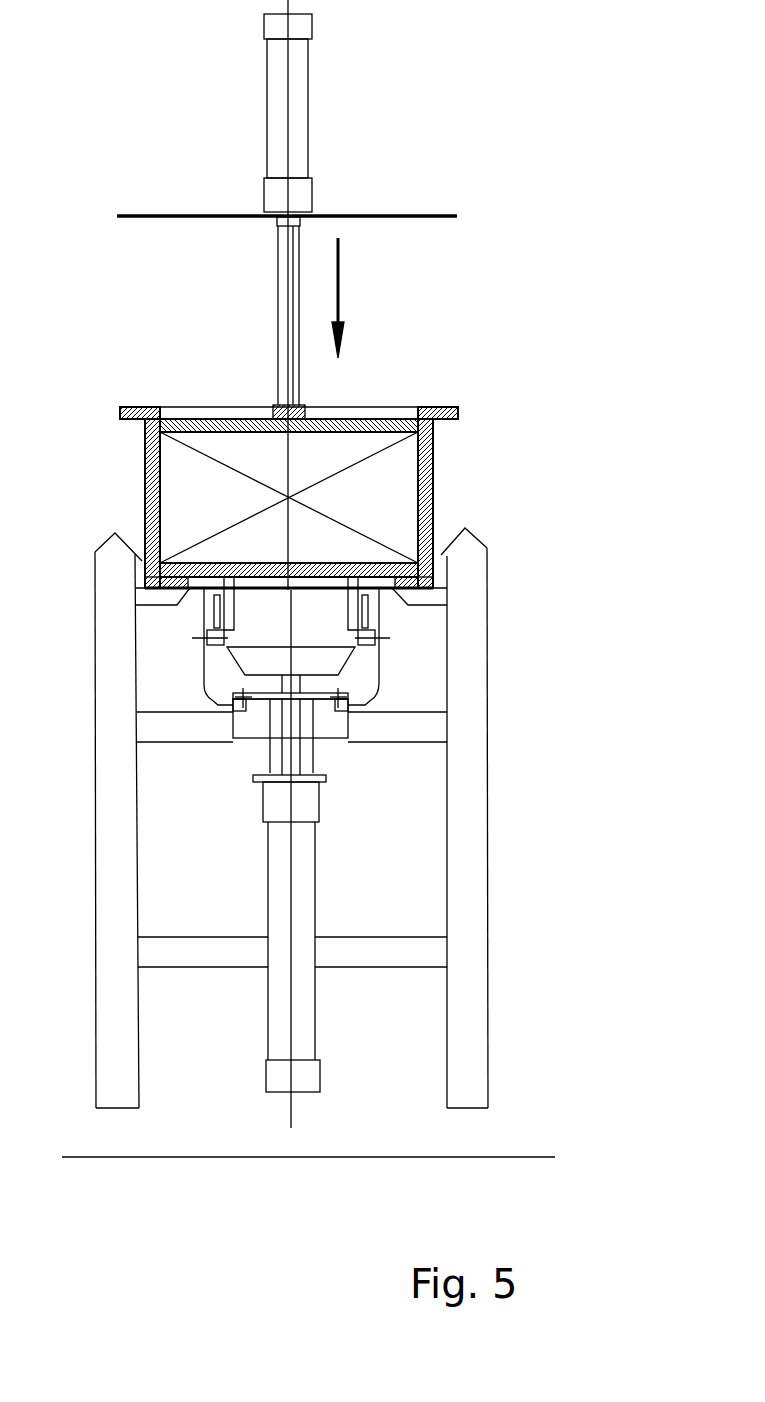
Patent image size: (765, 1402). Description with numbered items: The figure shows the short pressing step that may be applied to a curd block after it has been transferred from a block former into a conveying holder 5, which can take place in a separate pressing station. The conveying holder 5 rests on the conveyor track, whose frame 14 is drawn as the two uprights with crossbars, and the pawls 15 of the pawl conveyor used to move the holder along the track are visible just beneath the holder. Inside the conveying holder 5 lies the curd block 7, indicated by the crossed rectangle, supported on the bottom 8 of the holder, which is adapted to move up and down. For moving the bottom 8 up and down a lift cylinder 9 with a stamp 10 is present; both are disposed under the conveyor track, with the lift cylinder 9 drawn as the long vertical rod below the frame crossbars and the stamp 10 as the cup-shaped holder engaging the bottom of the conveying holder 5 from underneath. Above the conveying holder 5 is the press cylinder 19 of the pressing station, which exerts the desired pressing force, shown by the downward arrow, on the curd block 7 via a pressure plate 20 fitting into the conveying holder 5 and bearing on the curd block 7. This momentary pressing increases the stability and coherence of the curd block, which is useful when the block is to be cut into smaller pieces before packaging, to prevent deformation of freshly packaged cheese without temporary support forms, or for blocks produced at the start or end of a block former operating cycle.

The press cylinder 19 is at (308, 83).
The pressure plate 20 is at (387, 427).
The conveying holder 5 is at (435, 463).
The curd block 7 is at (383, 500).
The bottom 8 is at (168, 542).
The frame 14 is at (460, 810).
The stamp 10 is at (330, 663).
The pawls 15 is at (347, 603).
The lift cylinder 9 is at (303, 885).